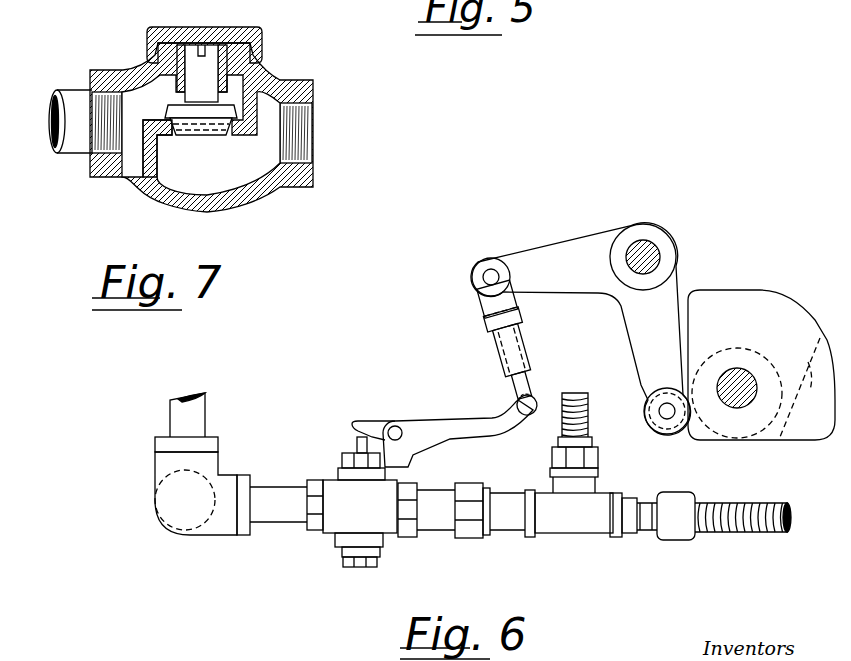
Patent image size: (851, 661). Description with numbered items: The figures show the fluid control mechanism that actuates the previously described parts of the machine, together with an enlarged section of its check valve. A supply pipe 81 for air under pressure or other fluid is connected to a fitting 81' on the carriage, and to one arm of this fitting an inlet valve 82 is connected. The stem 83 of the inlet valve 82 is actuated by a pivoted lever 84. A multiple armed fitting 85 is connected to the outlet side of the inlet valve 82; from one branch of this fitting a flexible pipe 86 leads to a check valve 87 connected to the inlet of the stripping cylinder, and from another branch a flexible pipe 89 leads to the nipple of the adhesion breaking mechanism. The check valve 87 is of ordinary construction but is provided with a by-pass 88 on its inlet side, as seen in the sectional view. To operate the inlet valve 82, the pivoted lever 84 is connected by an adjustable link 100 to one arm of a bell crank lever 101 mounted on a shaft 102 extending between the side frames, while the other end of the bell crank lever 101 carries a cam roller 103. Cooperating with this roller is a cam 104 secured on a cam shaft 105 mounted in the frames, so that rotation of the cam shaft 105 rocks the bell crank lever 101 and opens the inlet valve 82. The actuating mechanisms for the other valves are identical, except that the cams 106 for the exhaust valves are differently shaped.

In FIG. 6, the supply pipe 81 is at (194, 422).
In FIG. 6, the fitting 81' is at (204, 489).
In FIG. 6, the inlet valve 82 is at (333, 525).
In FIG. 6, the stem 83 is at (353, 443).
In FIG. 6, the pivoted lever 84 is at (433, 425).
In FIG. 6, the multiple armed fitting 85 is at (578, 522).
In FIG. 6, the flexible pipe 86 is at (748, 522).
In FIG. 7, the check valve 87 is at (265, 190).
In FIG. 7, the by-pass 88 is at (157, 147).
In FIG. 6, the flexible pipe 89 is at (585, 425).
In FIG. 6, the adjustable link 100 is at (500, 355).
In FIG. 6, the bell crank lever 101 is at (565, 247).
In FIG. 6, the shaft 102 is at (650, 245).
In FIG. 6, the cam roller 103 is at (677, 434).
In FIG. 6, the cam 104 is at (803, 430).
In FIG. 6, the cam shaft 105 is at (740, 407).
In FIG. 6, the cams 106 is at (810, 368).